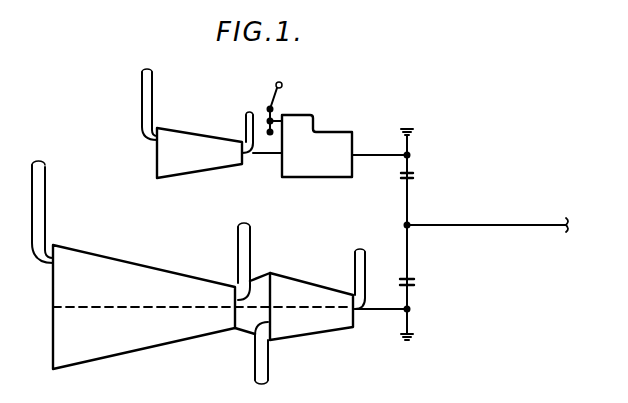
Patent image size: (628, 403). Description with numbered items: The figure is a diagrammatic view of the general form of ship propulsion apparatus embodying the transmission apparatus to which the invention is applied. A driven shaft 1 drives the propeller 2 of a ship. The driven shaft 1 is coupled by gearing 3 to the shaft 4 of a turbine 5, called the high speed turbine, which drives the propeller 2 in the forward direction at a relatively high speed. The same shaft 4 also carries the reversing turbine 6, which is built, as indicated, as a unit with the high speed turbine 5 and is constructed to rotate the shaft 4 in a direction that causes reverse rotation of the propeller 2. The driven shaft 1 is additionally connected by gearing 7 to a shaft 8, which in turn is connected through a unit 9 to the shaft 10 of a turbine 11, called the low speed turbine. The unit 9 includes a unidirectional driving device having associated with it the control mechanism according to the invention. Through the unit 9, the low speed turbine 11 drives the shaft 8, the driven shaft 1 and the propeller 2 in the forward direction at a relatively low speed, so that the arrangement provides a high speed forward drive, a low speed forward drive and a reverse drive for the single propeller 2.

The driven shaft 1 is at (460, 225).
The propeller 2 is at (567, 214).
The gearing 3 is at (432, 284).
The shaft 4 is at (380, 313).
The high speed turbine 5 is at (193, 330).
The reversing turbine 6 is at (327, 324).
The gearing 7 is at (412, 142).
The shaft 8 is at (375, 150).
The unit 9 is at (333, 142).
The shaft 10 is at (268, 151).
The low speed turbine 11 is at (179, 138).